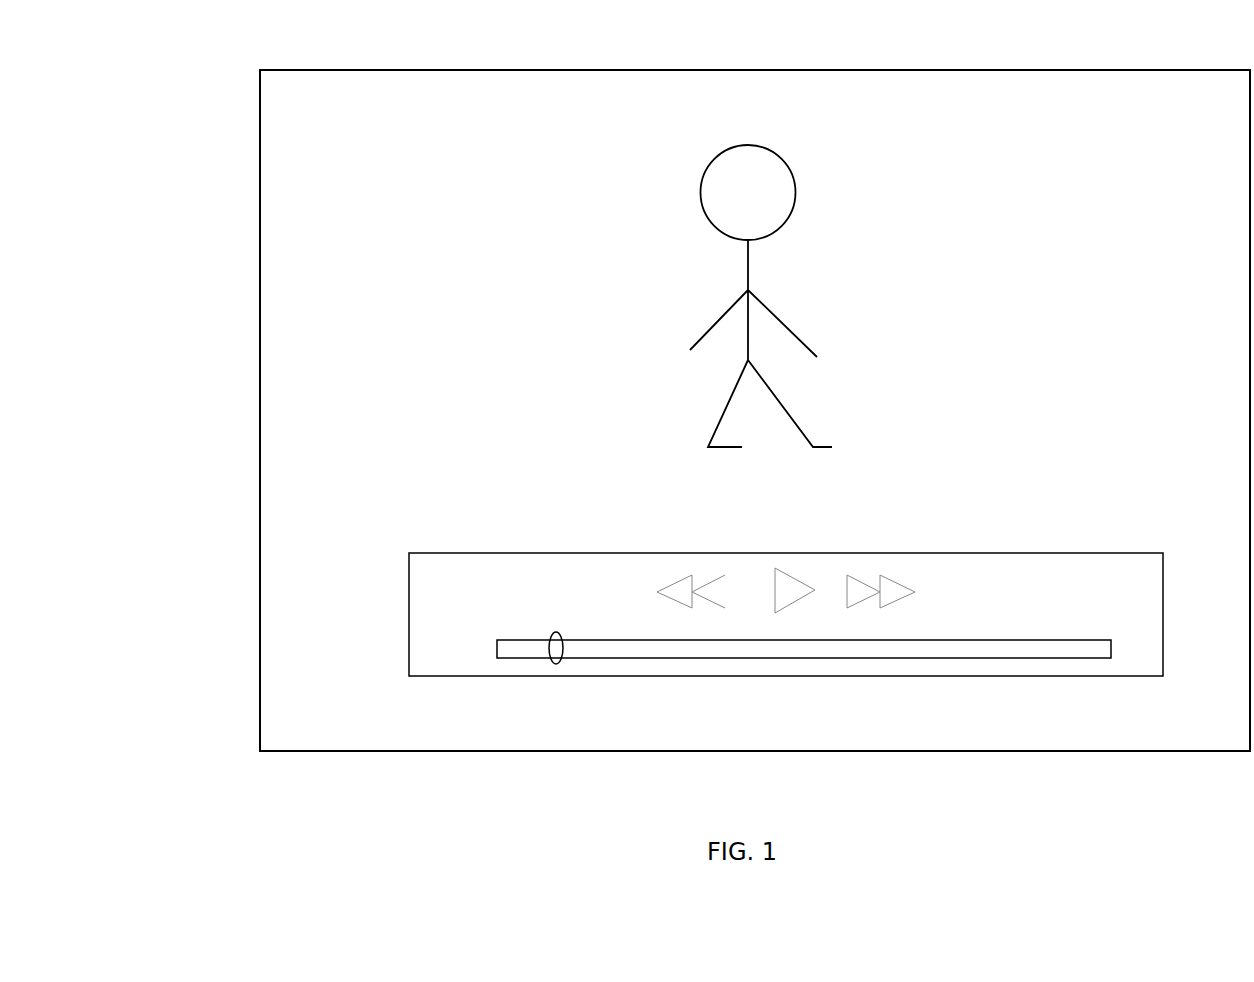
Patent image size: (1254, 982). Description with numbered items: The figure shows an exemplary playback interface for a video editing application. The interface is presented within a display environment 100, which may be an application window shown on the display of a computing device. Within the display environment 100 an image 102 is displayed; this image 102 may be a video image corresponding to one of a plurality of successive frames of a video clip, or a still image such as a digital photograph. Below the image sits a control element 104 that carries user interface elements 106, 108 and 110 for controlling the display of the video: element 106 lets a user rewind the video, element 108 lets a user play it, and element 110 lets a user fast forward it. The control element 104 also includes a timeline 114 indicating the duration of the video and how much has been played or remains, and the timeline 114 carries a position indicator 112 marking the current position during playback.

The display environment 100 is at (215, 117).
The image 102 is at (566, 263).
The control element 104 is at (498, 524).
The user interface element 106 is at (710, 562).
The user interface element 108 is at (801, 560).
The user interface element 110 is at (873, 560).
The position indicator 112 is at (553, 680).
The timeline 114 is at (1130, 648).